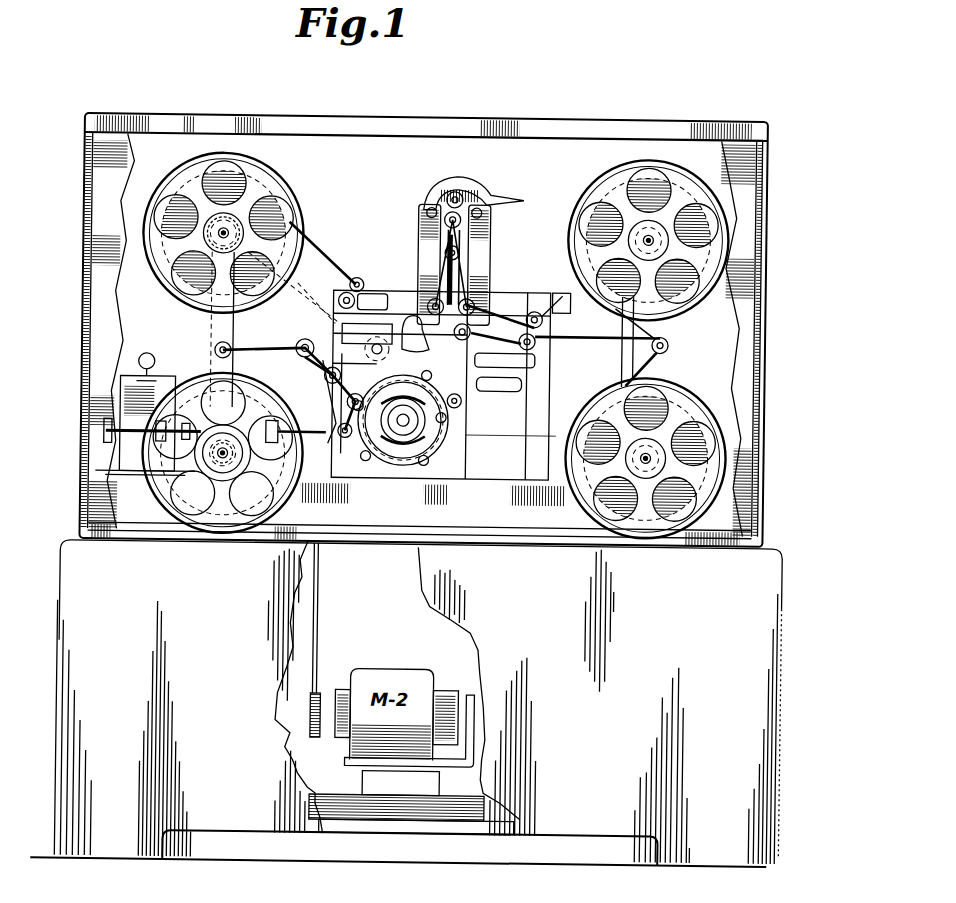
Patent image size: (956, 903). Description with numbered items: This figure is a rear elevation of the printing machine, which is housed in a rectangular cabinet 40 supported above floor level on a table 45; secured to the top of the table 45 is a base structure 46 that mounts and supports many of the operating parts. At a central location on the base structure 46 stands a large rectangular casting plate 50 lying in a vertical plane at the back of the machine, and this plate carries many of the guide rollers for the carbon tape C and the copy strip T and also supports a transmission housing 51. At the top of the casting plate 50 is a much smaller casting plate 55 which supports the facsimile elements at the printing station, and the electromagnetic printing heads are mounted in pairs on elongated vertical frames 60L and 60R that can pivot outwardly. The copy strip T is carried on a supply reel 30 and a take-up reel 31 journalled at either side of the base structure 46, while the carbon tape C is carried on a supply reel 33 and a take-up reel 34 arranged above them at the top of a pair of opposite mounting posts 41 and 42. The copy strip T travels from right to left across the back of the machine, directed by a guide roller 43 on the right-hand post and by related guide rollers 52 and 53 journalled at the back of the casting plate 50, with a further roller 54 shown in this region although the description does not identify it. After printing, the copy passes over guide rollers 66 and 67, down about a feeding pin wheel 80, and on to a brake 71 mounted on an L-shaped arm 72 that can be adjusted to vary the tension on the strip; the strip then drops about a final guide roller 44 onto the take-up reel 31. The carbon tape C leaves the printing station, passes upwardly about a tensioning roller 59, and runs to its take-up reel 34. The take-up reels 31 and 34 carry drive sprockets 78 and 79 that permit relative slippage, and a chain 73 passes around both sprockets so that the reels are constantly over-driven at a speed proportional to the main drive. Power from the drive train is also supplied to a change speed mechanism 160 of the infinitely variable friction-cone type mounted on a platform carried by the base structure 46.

The supply reel 30 is at (646, 536).
The take-up reel 31 is at (208, 530).
The supply reel 33 is at (605, 173).
The take-up reel 34 is at (262, 182).
The rectangular cabinet 40 is at (600, 120).
The mounting post 41 is at (658, 376).
The mounting post 42 is at (215, 316).
The guide roller 43 is at (672, 336).
The guide roller 44 is at (238, 344).
The table 45 is at (111, 618).
The base structure 46 is at (476, 514).
The casting plate 50 is at (538, 418).
The transmission housing 51 is at (428, 462).
The guide roller 52 is at (540, 346).
The guide roller 53 is at (457, 276).
The guide roller 54 is at (538, 305).
The casting plate 55 is at (433, 192).
The tensioning roller 59 is at (359, 288).
The vertical frame 60L is at (418, 204).
The vertical frame 60R is at (494, 236).
The guide roller 66 is at (547, 398).
The guide roller 67 is at (462, 400).
The brake 71 is at (275, 348).
The L-shaped arm 72 is at (315, 404).
The chain 73 is at (300, 285).
The drive sprocket 78 is at (223, 247).
The drive sprocket 79 is at (222, 435).
The feeding pin wheel 80 is at (452, 428).
The change speed mechanism 160 is at (130, 375).
The carbon tape C is at (318, 232).
The copy strip T is at (582, 334).